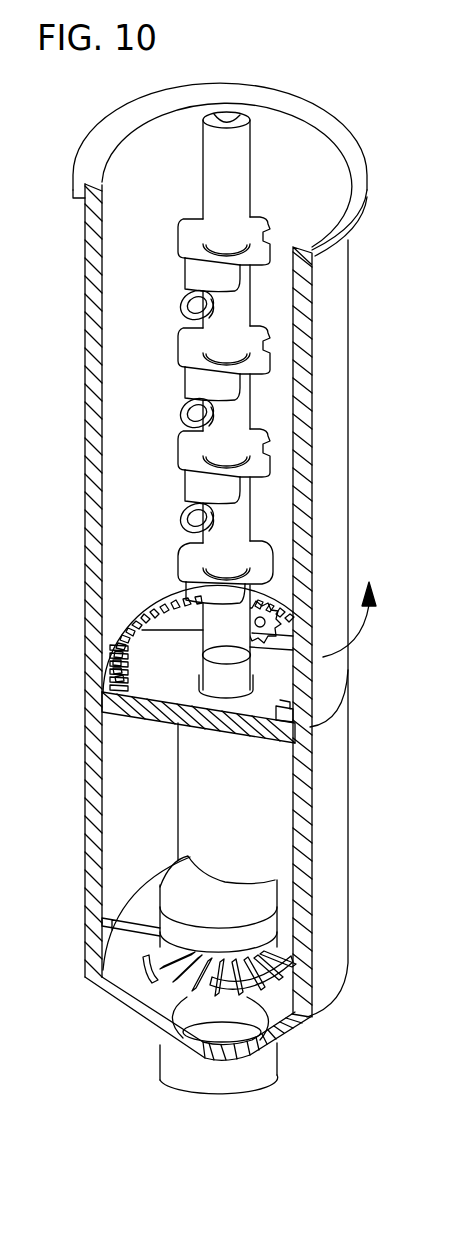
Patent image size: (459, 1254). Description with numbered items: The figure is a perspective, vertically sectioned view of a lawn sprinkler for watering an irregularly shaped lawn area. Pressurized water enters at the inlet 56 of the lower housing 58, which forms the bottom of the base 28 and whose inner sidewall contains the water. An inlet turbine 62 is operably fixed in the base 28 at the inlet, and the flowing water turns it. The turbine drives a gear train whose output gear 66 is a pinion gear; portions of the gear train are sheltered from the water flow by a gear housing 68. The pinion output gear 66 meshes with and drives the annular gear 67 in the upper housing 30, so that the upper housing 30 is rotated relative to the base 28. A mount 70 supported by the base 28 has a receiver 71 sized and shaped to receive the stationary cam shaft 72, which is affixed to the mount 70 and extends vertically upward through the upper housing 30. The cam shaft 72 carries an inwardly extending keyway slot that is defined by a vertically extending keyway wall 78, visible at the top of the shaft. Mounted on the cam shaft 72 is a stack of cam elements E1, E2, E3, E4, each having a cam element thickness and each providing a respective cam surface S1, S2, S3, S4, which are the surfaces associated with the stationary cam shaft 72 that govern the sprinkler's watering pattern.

The upper housing 30 is at (348, 452).
The base 28 is at (337, 912).
The stationary cam shaft 72 is at (238, 203).
The keyway wall 78 is at (228, 120).
The cam element E1 is at (188, 242).
The cam surface S1 is at (177, 260).
The cam element E2 is at (188, 344).
The cam surface S2 is at (190, 380).
The cam element E3 is at (188, 450).
The cam surface S3 is at (190, 484).
The cam element E4 is at (190, 570).
The cam surface S4 is at (187, 592).
The annular gear 67 is at (100, 689).
The output gear 66 is at (273, 615).
The mount 70 is at (170, 688).
The receiver 71 is at (290, 705).
The gear housing 68 is at (178, 820).
The inlet turbine 62 is at (143, 968).
The lower housing 58 is at (293, 1032).
The inlet 56 is at (160, 1043).